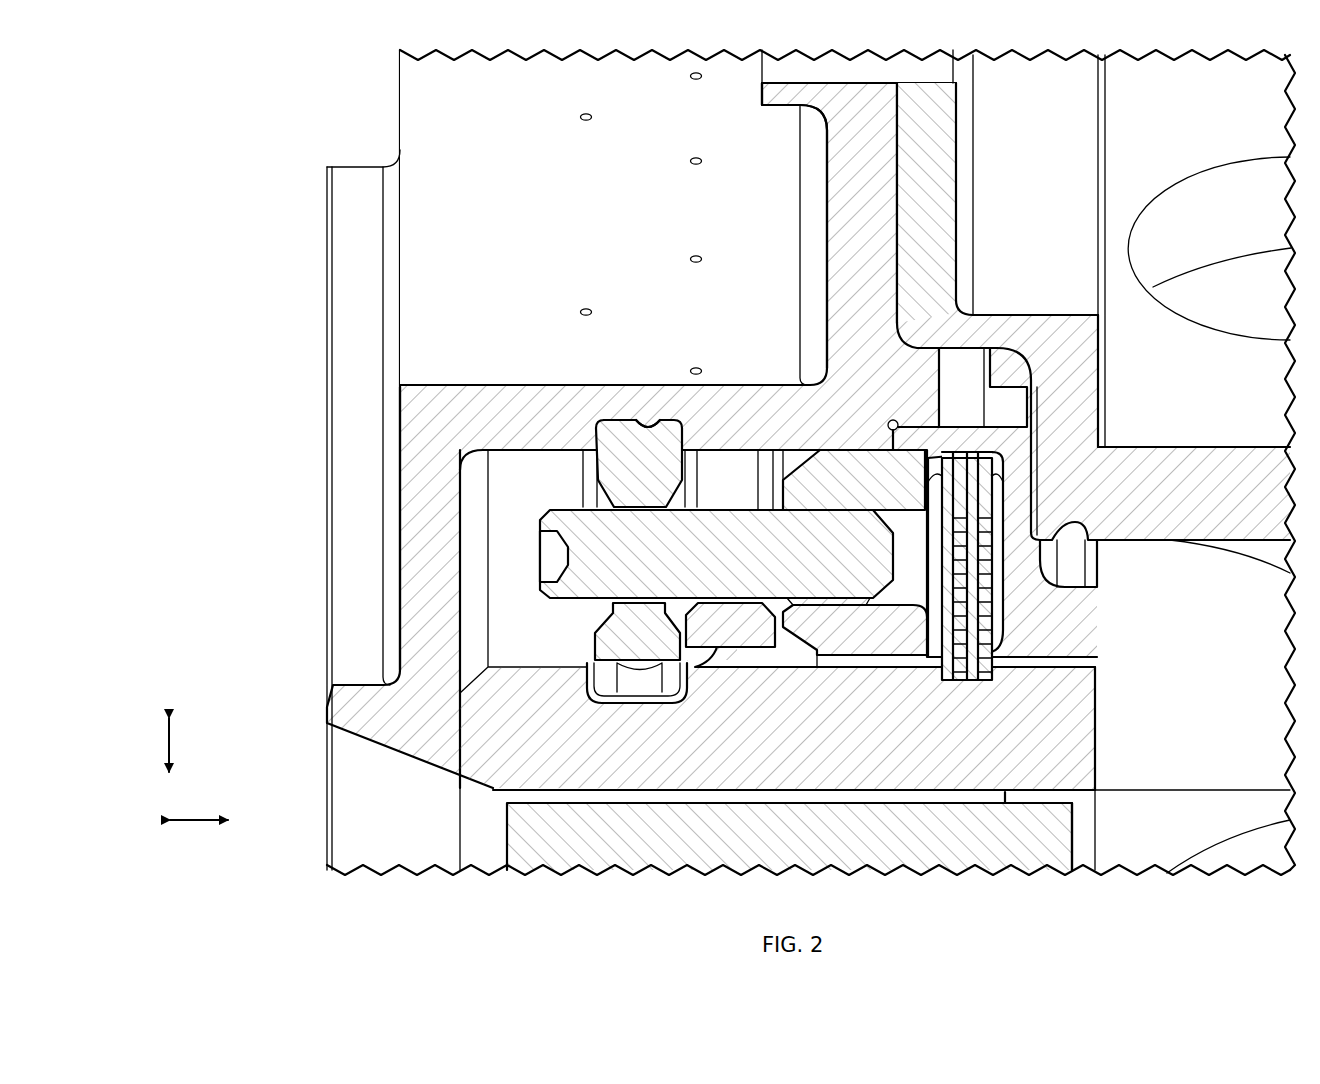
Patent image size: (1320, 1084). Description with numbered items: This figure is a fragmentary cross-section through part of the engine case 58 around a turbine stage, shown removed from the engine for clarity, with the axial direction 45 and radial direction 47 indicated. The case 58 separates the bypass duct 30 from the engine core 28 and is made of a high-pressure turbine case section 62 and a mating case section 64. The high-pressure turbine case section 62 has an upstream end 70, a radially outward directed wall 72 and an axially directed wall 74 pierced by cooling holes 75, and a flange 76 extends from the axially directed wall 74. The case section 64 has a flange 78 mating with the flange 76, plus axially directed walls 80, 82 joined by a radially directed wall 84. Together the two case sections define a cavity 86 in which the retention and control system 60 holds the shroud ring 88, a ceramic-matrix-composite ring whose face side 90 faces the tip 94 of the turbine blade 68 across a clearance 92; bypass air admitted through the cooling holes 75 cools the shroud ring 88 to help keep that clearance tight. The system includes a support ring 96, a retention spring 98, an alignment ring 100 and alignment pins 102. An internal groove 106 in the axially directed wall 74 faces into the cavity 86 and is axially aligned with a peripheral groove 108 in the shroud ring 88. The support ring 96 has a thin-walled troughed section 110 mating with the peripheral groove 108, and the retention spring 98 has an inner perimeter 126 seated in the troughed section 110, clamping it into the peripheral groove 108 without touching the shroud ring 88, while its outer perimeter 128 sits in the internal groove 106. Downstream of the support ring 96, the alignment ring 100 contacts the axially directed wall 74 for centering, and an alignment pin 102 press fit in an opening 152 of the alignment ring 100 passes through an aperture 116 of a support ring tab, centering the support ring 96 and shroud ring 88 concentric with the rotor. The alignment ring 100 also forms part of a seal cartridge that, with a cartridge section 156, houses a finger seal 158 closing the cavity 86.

The engine core 28 is at (808, 839).
The bypass duct 30 is at (400, 99).
The axial direction 45 is at (198, 820).
The radial direction 47 is at (169, 748).
The case 58 is at (994, 312).
The retention and control system 60 is at (734, 372).
The high-pressure turbine case section 62 is at (398, 378).
The case section 64 is at (1138, 450).
The turbine blade 68 is at (1054, 872).
The upstream end 70 is at (327, 707).
The radially outward directed wall 72 is at (403, 538).
The axially directed wall 74 is at (474, 396).
The cooling holes 75 is at (690, 162).
The flange 76 is at (832, 178).
The flange 78 is at (950, 127).
The axially directed wall 80 is at (1017, 342).
The axially directed wall 82 is at (1228, 458).
The radially directed wall 84 is at (1090, 350).
The cavity 86 is at (523, 571).
The shroud ring 88 is at (1086, 716).
The face side 90 is at (1005, 800).
The clearance 92 is at (513, 798).
The tip 94 is at (1063, 800).
The support ring 96 is at (733, 642).
The retention spring 98 is at (682, 442).
The alignment ring 100 is at (838, 656).
The alignment pins 102 is at (567, 600).
The internal groove 106 is at (660, 420).
The peripheral groove 108 is at (620, 692).
The troughed section 110 is at (694, 680).
The aperture 116 is at (727, 608).
The inner perimeter 126 is at (648, 696).
The outer perimeter 128 is at (616, 422).
The opening 152 is at (912, 595).
The cartridge section 156 is at (1097, 590).
The finger seal 158 is at (994, 650).